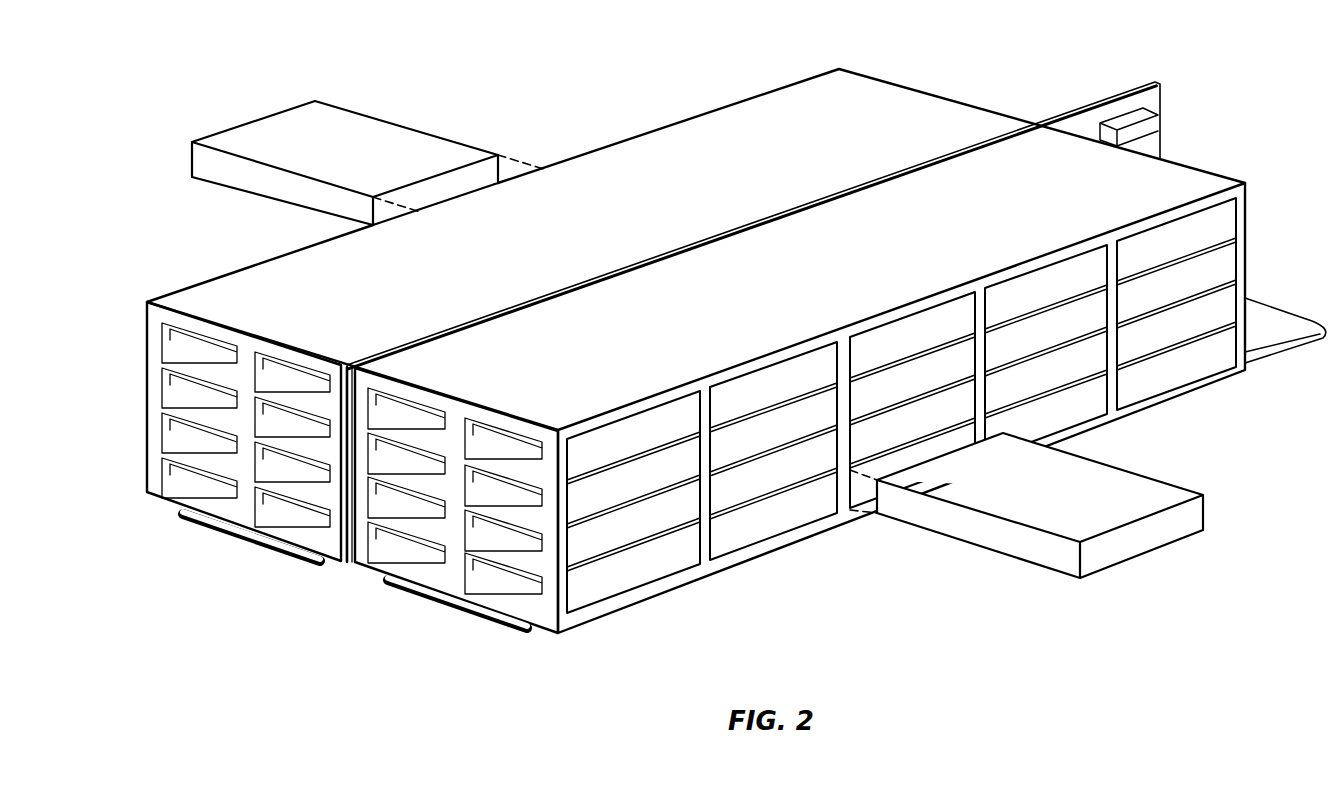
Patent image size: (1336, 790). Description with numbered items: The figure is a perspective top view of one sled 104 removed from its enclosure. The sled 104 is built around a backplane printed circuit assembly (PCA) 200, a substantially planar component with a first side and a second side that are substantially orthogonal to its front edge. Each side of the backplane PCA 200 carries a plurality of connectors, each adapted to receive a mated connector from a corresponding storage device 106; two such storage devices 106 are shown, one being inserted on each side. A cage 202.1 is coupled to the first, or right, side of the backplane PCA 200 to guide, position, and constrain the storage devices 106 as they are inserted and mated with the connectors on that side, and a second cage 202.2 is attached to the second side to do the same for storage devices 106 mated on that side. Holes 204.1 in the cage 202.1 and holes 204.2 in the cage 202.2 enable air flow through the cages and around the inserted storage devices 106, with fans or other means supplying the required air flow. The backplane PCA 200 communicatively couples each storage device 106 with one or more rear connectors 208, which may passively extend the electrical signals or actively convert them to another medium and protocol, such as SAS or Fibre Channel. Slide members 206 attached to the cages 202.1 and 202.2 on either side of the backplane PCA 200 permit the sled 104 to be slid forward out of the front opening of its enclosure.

The sled 104 is at (689, 358).
The storage device 106 is at (405, 140).
The backplane printed circuit assembly (PCA) 200 is at (1075, 122).
The cage 202.1 is at (752, 423).
The second cage 202.2 is at (200, 432).
The holes 204.1 is at (545, 590).
The holes 204.2 is at (162, 465).
The slide member 206 is at (220, 535).
The rear connector 208 is at (1148, 133).